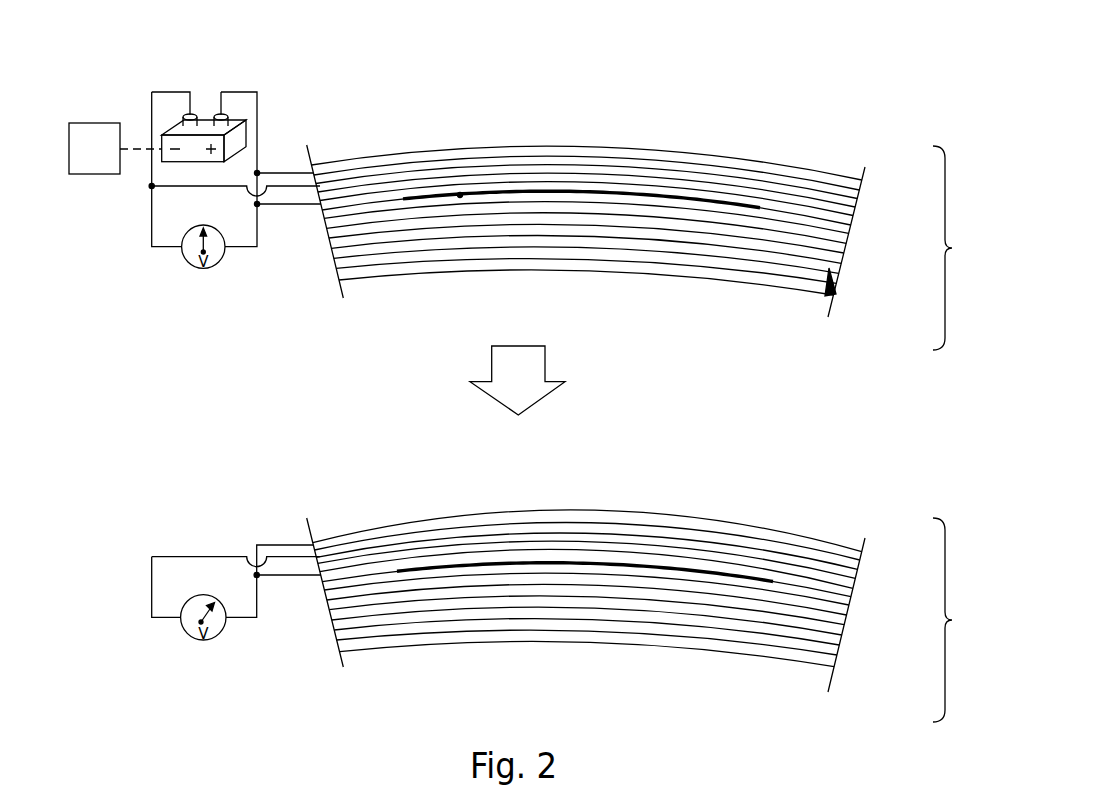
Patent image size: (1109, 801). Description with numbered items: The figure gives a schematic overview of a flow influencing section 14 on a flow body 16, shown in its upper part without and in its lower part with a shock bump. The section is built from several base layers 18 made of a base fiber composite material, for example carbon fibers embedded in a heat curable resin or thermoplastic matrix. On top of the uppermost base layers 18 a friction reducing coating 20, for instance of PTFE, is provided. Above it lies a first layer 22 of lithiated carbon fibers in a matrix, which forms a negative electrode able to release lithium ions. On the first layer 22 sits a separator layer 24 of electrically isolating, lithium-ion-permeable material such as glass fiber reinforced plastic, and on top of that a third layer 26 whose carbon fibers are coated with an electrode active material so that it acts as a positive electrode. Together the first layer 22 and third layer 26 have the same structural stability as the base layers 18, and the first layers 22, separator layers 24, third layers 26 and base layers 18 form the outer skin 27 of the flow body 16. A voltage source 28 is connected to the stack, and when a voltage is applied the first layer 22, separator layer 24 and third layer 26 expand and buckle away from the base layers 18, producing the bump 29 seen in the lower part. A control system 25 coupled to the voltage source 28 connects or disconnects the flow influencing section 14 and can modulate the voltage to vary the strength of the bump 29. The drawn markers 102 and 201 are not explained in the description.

The flow influencing section 14 is at (609, 374).
The flow body 16 is at (834, 308).
The base layers 18 is at (327, 220).
The friction reducing coating 20 is at (428, 197).
The first layer 22 is at (470, 187).
The separator layer 24 is at (528, 177).
The control system 25 is at (95, 138).
The third layer 26 is at (575, 173).
The outer skin 27 is at (959, 434).
The voltage source 28 is at (205, 123).
The bump 29 is at (657, 486).
The contact point 102 is at (463, 210).
The current feed 201 is at (202, 108).